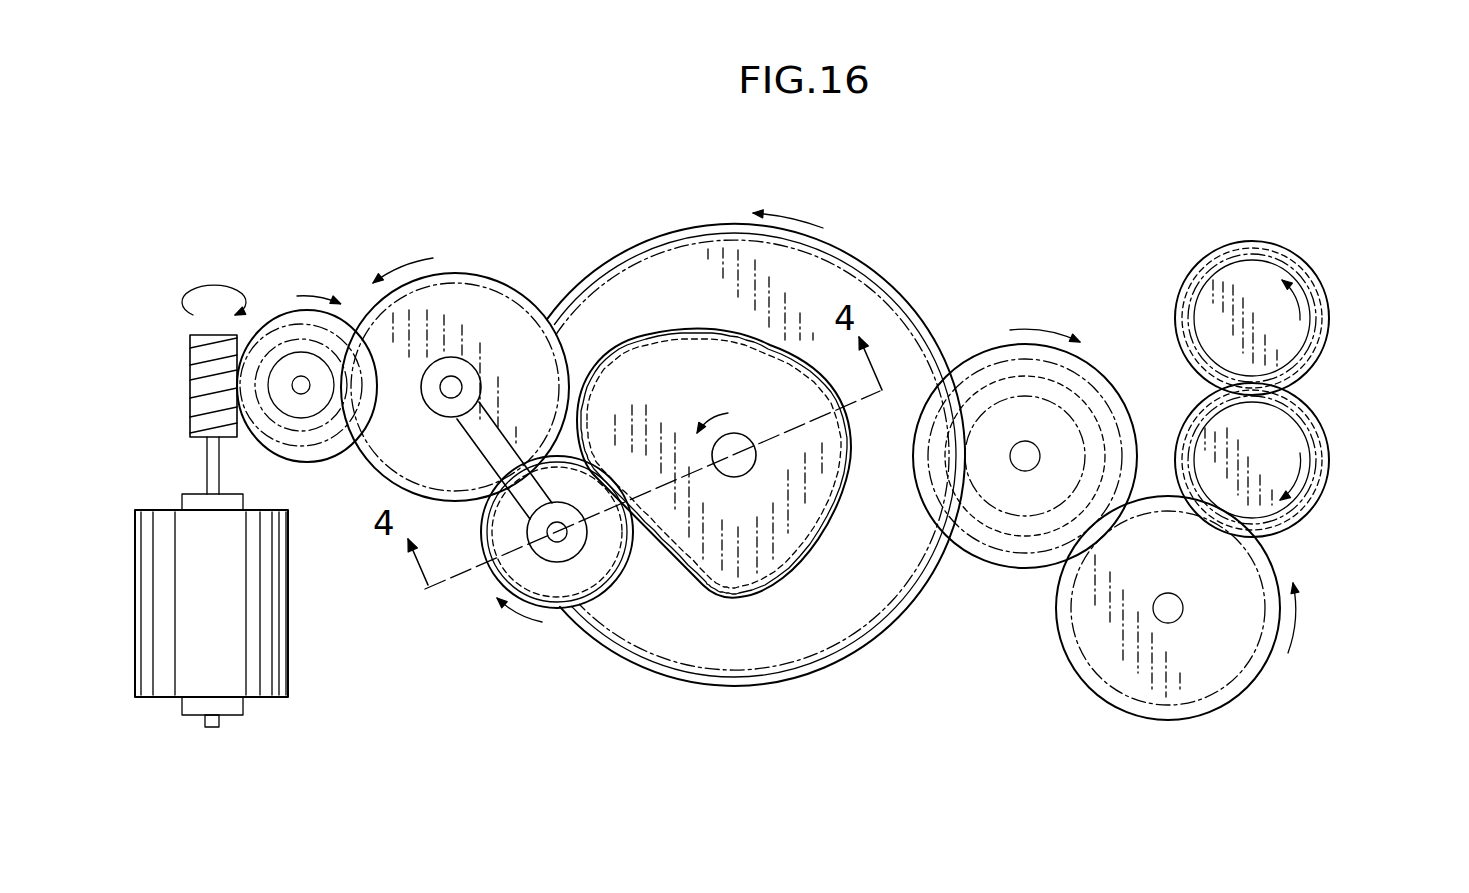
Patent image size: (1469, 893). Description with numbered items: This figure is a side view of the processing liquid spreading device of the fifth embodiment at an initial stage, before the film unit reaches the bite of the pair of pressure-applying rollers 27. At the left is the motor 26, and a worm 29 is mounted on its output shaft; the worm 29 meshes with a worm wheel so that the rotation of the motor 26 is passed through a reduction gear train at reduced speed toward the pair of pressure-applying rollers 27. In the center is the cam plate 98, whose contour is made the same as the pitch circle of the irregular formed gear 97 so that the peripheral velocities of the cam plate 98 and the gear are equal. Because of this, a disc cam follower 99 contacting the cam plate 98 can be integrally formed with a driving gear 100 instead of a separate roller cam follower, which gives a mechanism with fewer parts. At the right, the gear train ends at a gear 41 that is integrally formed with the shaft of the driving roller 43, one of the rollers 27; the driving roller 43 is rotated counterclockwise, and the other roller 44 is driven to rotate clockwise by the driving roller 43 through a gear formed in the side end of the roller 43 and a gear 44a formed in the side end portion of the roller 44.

The motor 26 is at (268, 677).
The worm 29 is at (197, 368).
The ring gear 97 is at (668, 332).
The cam plate 98 is at (808, 547).
The disc cam follower 99 is at (557, 607).
The driving gear 100 is at (492, 568).
The pair of pressure-applying rollers 27 is at (1318, 355).
The roller 44 is at (1327, 327).
The gear 44a is at (1265, 241).
The driving roller 43 is at (1327, 440).
The gear 41 is at (1313, 497).